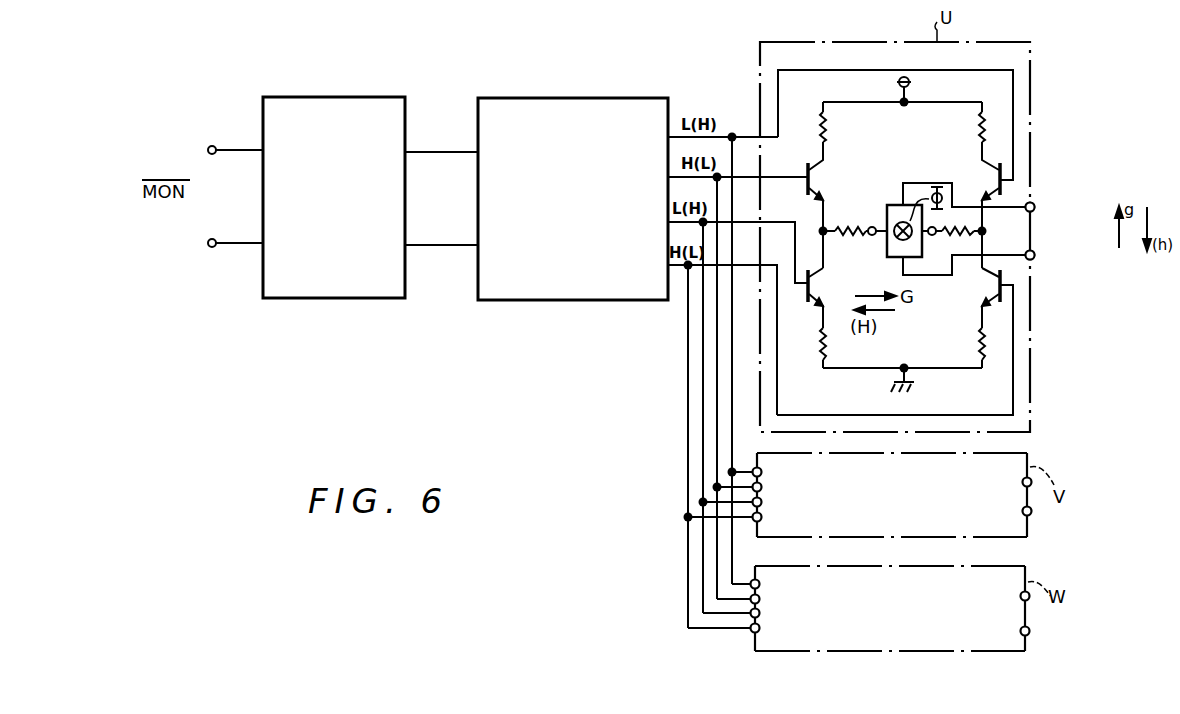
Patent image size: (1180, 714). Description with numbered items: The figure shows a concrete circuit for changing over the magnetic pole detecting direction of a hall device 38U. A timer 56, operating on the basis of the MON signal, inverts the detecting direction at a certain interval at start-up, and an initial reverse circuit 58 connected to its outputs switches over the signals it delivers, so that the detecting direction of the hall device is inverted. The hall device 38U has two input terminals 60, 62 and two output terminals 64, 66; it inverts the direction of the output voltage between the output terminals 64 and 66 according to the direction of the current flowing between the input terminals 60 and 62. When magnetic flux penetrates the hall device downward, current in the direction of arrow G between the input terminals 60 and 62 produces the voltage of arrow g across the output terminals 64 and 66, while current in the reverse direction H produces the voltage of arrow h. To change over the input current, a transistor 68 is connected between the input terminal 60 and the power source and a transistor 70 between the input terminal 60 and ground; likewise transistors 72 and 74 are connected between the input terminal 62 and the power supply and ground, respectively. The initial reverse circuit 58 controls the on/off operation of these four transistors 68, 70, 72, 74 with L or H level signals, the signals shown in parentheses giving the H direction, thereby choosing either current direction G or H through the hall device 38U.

The timer 56 is at (318, 97).
The initial reverse circuit 58 is at (558, 98).
The input terminal 60 is at (866, 238).
The input terminal 62 is at (932, 236).
The output terminal 64 is at (1036, 207).
The output terminal 66 is at (1036, 255).
The transistor 68 is at (822, 176).
The transistor 70 is at (812, 304).
The transistor 72 is at (991, 168).
The transistor 74 is at (992, 298).
The hall device 38U is at (895, 204).